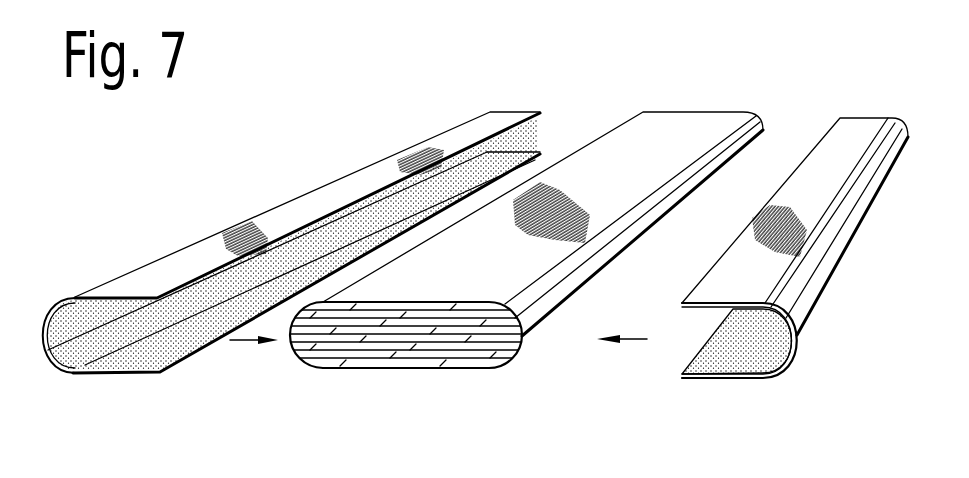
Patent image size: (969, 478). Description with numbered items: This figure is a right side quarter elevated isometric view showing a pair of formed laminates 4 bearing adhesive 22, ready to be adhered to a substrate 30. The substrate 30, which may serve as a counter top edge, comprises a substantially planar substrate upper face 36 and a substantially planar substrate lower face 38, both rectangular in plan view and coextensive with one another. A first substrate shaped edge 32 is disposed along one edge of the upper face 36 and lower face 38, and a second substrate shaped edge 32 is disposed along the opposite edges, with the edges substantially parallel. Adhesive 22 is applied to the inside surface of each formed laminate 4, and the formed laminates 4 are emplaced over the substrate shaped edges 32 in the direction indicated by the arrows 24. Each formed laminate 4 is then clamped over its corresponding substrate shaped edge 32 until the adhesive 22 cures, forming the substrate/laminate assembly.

The formed laminate 4 is at (350, 185).
The adhesive 22 is at (143, 357).
The arrows 24 is at (247, 343).
The substrate 30 is at (400, 338).
The substrate shaped edge 32 is at (290, 340).
The substrate upper face 36 is at (668, 132).
The substrate lower face 38 is at (462, 370).